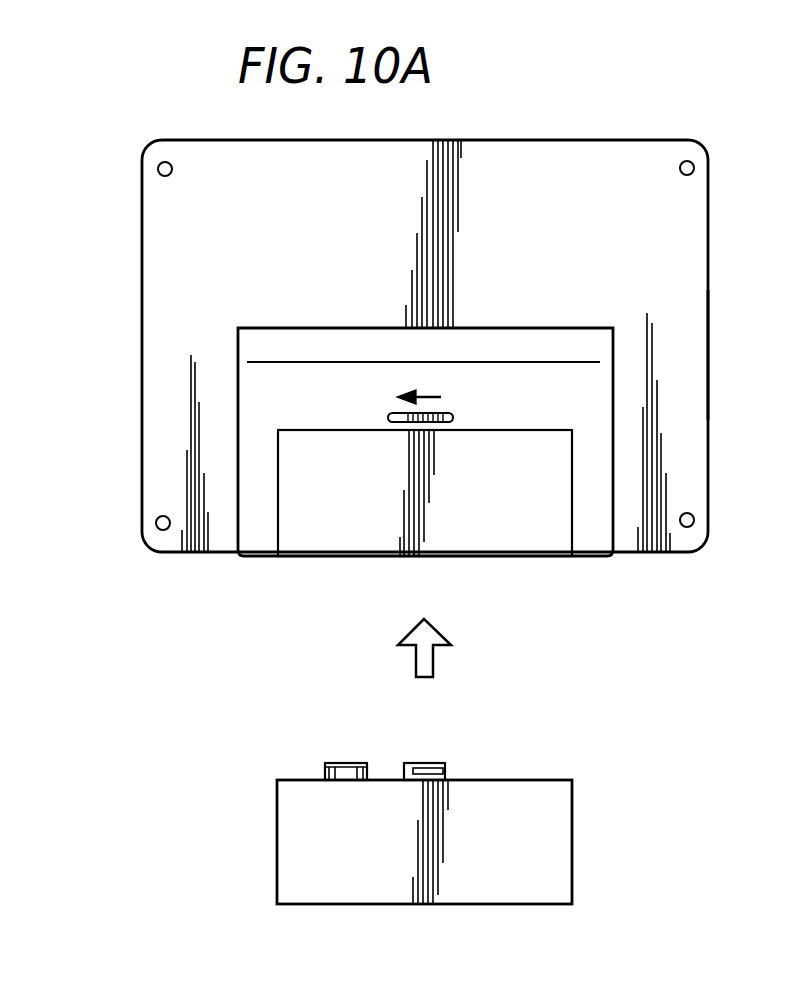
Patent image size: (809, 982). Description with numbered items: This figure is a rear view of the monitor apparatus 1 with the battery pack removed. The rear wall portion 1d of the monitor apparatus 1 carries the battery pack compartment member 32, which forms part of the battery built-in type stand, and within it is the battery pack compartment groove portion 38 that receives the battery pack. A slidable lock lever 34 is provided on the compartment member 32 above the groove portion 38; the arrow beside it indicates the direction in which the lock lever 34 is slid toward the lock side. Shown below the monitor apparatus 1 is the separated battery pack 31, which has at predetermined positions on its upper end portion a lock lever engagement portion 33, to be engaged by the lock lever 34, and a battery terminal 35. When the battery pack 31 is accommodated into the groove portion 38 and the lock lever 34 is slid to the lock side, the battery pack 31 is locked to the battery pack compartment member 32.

The monitor apparatus 1 is at (708, 240).
The rear wall portion 1d is at (690, 325).
The battery pack compartment member 32 is at (590, 527).
The battery pack compartment groove portion 38 is at (523, 536).
The lock lever 34 is at (425, 412).
The battery pack 31 is at (562, 835).
The lock lever engagement portion 33 is at (430, 763).
The battery terminal 35 is at (340, 763).